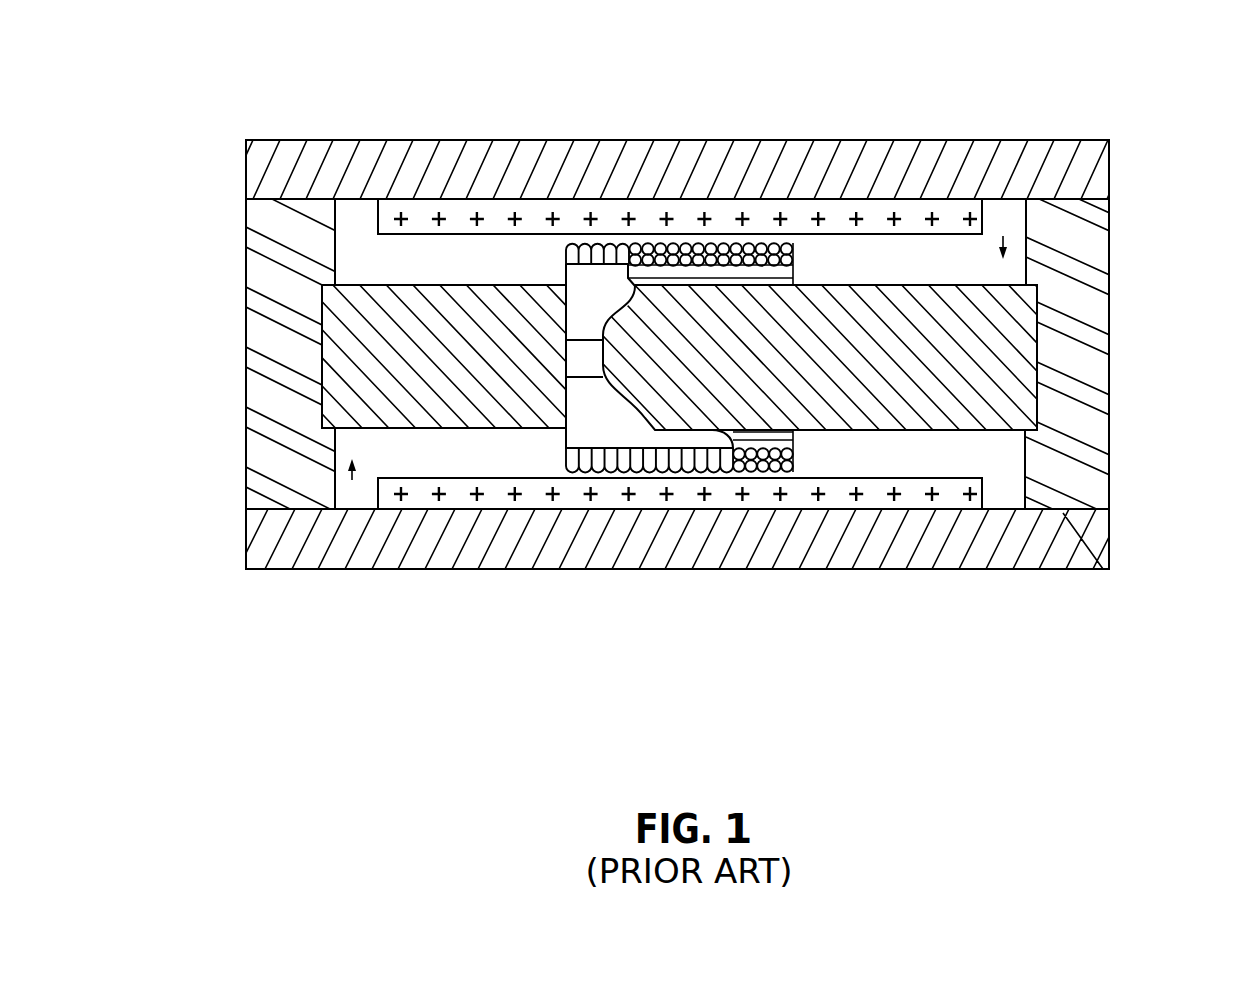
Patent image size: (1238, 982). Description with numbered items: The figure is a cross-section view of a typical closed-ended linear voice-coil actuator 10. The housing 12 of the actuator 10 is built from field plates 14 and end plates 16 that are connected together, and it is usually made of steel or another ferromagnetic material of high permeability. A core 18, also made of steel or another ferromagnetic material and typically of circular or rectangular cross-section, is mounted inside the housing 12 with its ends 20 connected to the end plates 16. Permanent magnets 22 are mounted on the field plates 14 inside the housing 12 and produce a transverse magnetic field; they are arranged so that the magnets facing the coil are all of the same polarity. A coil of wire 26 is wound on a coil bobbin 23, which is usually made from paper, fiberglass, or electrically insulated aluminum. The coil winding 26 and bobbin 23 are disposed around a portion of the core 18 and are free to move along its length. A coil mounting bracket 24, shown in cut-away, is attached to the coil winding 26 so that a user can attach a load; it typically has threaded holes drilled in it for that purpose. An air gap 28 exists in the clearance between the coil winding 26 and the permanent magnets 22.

The closed-ended linear voice-coil actuator 10 is at (666, 399).
The housing 12 is at (696, 308).
The field plates 14 is at (571, 140).
The end plates 16 is at (1110, 348).
The core 18 is at (963, 408).
The ends of core 20 is at (327, 368).
The permanent magnets 22 is at (767, 213).
The coil bobbin 23 is at (794, 442).
The coil mounting bracket 24 is at (583, 430).
The coil winding 26 is at (772, 470).
The air gap 28 is at (577, 243).